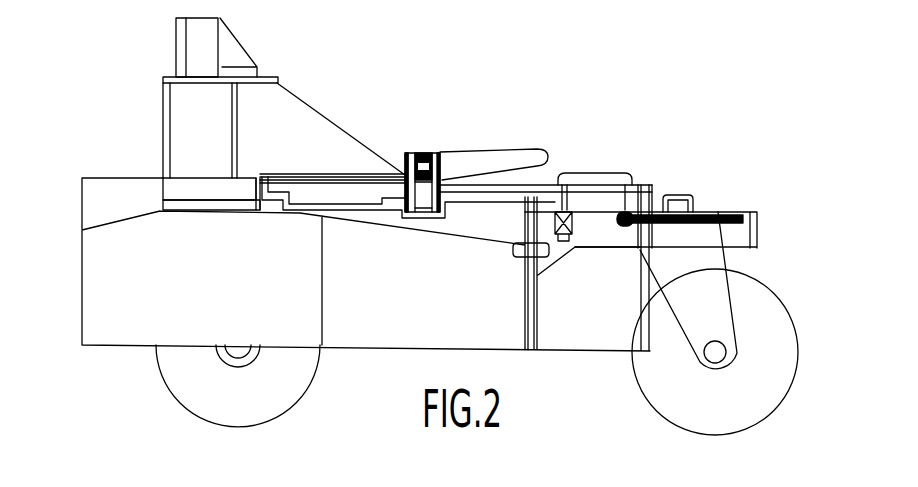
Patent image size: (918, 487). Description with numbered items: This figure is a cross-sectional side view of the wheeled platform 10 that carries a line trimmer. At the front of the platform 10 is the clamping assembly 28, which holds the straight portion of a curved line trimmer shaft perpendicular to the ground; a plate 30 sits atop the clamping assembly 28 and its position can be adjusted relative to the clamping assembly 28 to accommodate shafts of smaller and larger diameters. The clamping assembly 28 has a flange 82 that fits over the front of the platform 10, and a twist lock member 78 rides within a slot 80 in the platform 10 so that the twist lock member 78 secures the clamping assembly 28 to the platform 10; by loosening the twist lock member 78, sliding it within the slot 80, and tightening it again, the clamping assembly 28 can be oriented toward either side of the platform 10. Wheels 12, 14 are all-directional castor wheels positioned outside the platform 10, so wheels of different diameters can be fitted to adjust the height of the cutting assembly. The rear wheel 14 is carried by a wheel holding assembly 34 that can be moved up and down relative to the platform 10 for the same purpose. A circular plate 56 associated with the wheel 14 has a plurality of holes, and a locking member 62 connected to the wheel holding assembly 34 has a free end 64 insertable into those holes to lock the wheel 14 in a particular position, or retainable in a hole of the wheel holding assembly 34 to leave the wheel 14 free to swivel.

The platform 10 is at (82, 228).
The wheel 12 is at (168, 382).
The wheel 14 is at (797, 330).
The clamping assembly 28 is at (315, 105).
The plate 30 is at (182, 53).
The wheel holding assembly 34 is at (757, 225).
The circular plate 56 is at (720, 207).
The locking member 62 is at (595, 173).
The free end 64 is at (625, 208).
The twist lock member 78 is at (445, 153).
The slot 80 is at (448, 208).
The flange 82 is at (257, 210).